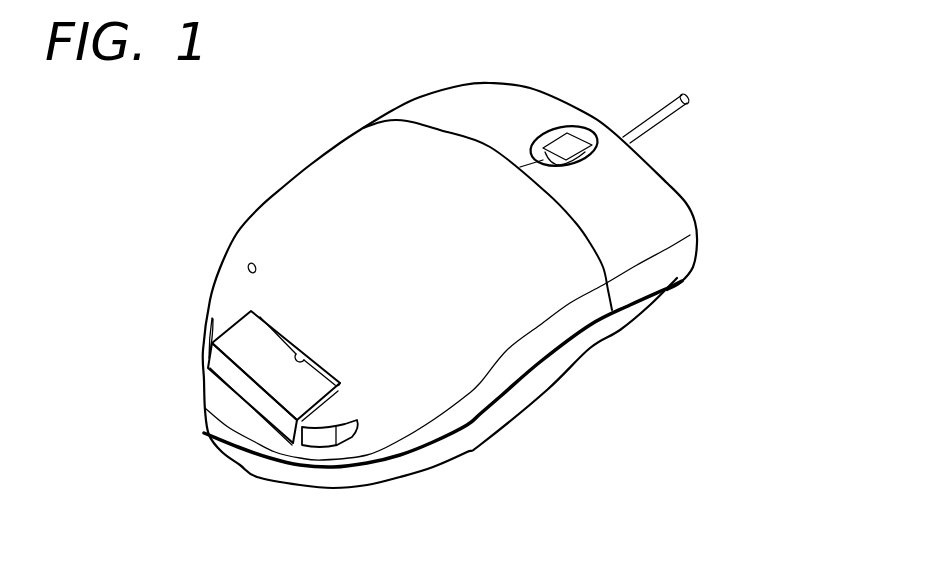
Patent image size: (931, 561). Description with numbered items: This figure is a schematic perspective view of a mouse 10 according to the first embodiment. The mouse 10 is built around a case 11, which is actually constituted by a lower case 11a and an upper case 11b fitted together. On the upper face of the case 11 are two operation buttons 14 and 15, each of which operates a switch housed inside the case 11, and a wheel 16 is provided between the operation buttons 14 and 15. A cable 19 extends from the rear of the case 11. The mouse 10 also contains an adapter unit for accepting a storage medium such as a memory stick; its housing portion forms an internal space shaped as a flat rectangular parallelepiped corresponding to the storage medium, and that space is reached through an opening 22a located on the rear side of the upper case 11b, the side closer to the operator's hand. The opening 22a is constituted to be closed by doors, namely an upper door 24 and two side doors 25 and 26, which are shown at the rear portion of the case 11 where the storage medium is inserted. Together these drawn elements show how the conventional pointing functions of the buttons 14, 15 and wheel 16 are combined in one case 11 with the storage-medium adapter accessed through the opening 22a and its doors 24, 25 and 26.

The mouse 10 is at (203, 111).
The case 11 is at (549, 401).
The lower case 11a is at (477, 433).
The upper case 11b is at (570, 322).
The operation button 14 is at (422, 103).
The operation button 15 is at (680, 212).
The wheel 16 is at (565, 140).
The cable 19 is at (675, 113).
The opening 22a is at (310, 360).
The upper door 24 is at (255, 350).
The side door 25 is at (207, 335).
The side door 26 is at (315, 438).